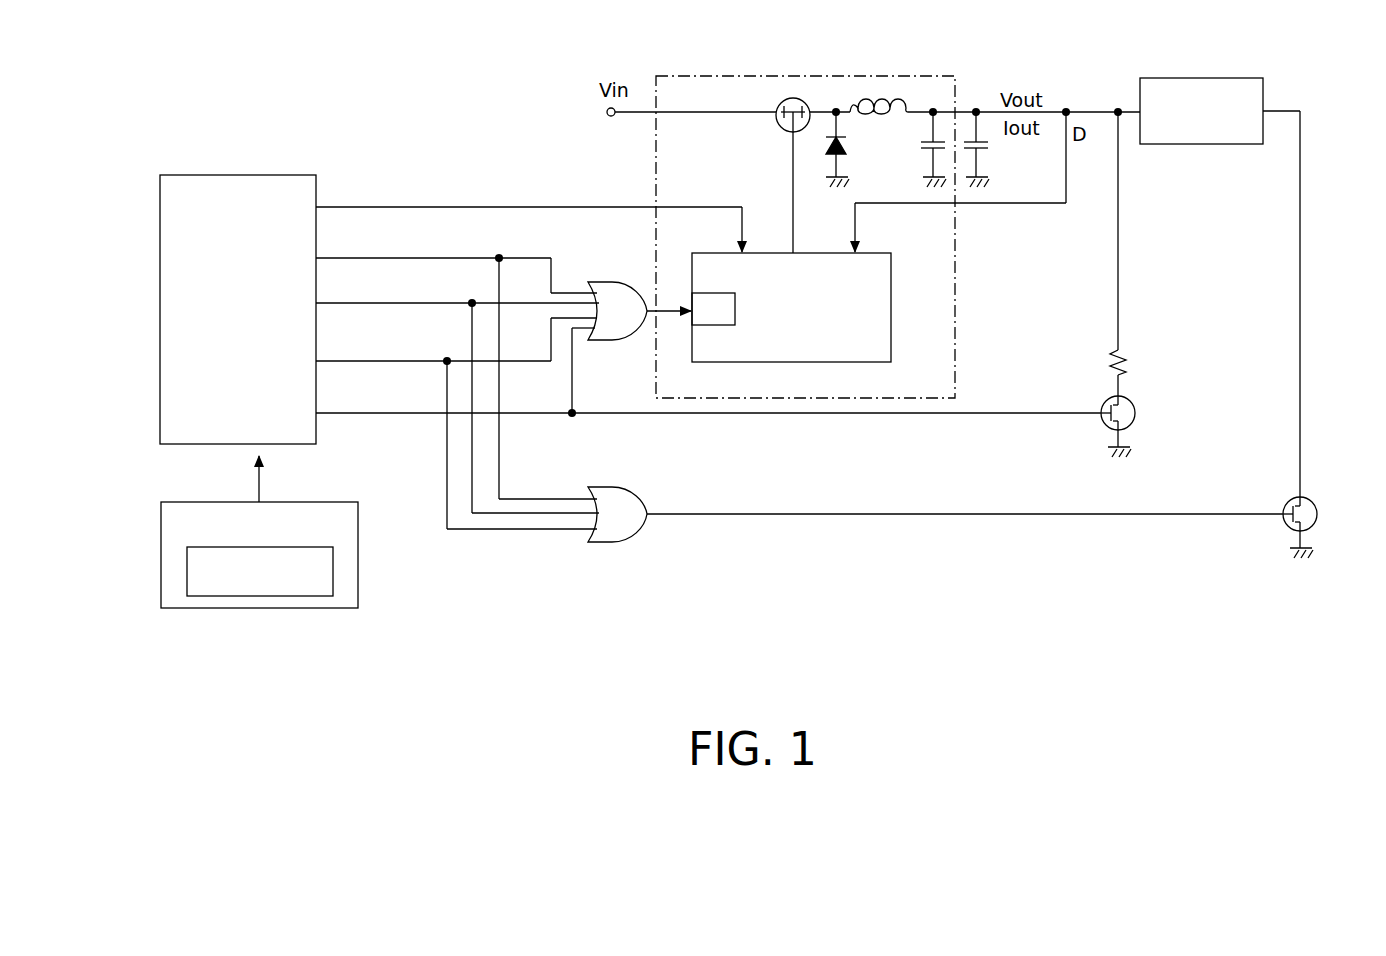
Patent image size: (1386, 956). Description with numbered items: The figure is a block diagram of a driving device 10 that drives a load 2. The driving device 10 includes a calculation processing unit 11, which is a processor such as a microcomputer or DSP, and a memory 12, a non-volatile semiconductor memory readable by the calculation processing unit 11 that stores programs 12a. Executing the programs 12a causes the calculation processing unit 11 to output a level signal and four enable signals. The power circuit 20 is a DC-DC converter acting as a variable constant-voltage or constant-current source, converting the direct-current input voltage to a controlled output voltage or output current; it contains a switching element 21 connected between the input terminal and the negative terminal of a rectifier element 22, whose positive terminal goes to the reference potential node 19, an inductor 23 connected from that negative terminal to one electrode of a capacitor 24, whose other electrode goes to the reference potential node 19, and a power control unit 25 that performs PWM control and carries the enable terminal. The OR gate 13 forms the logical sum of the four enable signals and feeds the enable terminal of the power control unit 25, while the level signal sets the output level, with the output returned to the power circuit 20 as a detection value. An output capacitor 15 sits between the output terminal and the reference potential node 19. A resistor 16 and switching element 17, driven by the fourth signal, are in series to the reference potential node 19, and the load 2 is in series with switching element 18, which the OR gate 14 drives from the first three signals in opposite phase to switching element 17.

The driving device 10 is at (338, 68).
The calculation processing unit 11 is at (292, 175).
The memory 12 is at (332, 502).
The programs 12a is at (333, 572).
The OR gate 13 is at (600, 282).
The OR gate 14 is at (600, 487).
The output capacitor 15 is at (988, 145).
The resistor 16 is at (1122, 355).
The switching element 17 is at (1137, 416).
The switching element 18 is at (1318, 518).
The reference potential node 19 is at (832, 184).
The power circuit 20 is at (950, 76).
The switching element 21 is at (777, 132).
The rectifier element 22 is at (829, 150).
The inductor 23 is at (890, 122).
The capacitor 24 is at (921, 145).
The power control unit 25 is at (892, 283).
The load 2 is at (1228, 78).